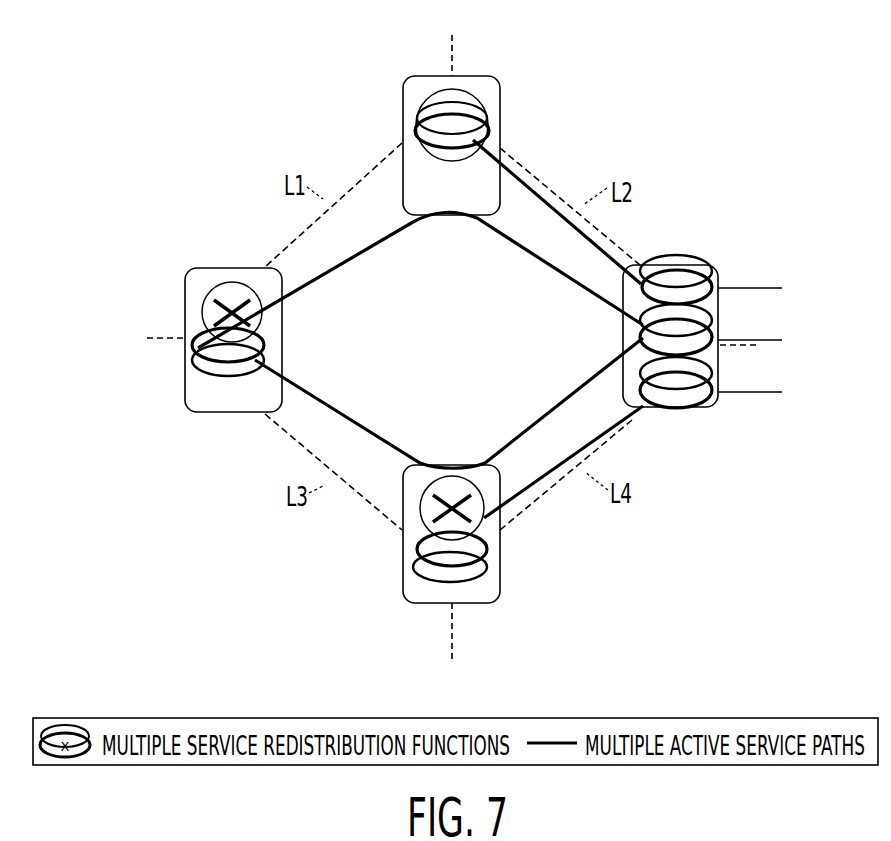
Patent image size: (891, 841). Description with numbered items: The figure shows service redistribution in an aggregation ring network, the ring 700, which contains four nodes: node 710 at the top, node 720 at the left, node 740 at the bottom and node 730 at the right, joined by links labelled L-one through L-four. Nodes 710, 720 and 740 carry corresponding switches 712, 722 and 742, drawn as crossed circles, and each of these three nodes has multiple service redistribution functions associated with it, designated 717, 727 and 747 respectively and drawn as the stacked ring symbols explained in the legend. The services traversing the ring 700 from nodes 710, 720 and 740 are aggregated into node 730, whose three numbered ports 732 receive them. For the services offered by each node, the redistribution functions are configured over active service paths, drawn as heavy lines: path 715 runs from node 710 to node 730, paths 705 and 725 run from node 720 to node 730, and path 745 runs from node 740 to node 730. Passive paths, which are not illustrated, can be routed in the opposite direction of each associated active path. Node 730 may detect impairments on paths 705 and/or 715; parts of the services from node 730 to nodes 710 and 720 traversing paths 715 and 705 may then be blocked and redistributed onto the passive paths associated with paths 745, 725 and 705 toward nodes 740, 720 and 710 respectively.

The ring 700 is at (213, 112).
The service path 705 is at (334, 265).
The node 710 is at (402, 102).
The switch 712 is at (470, 103).
The service path 715 is at (523, 177).
The service redistribution functions 717 is at (490, 140).
The node 720 is at (185, 293).
The switch 722 is at (262, 318).
The service path 725 is at (342, 417).
The service redistribution functions 727 is at (197, 343).
The node 730 is at (717, 396).
The service ports 732 is at (707, 312).
The node 740 is at (402, 576).
The switch 742 is at (484, 503).
The service path 745 is at (605, 433).
The service redistribution functions 747 is at (487, 552).